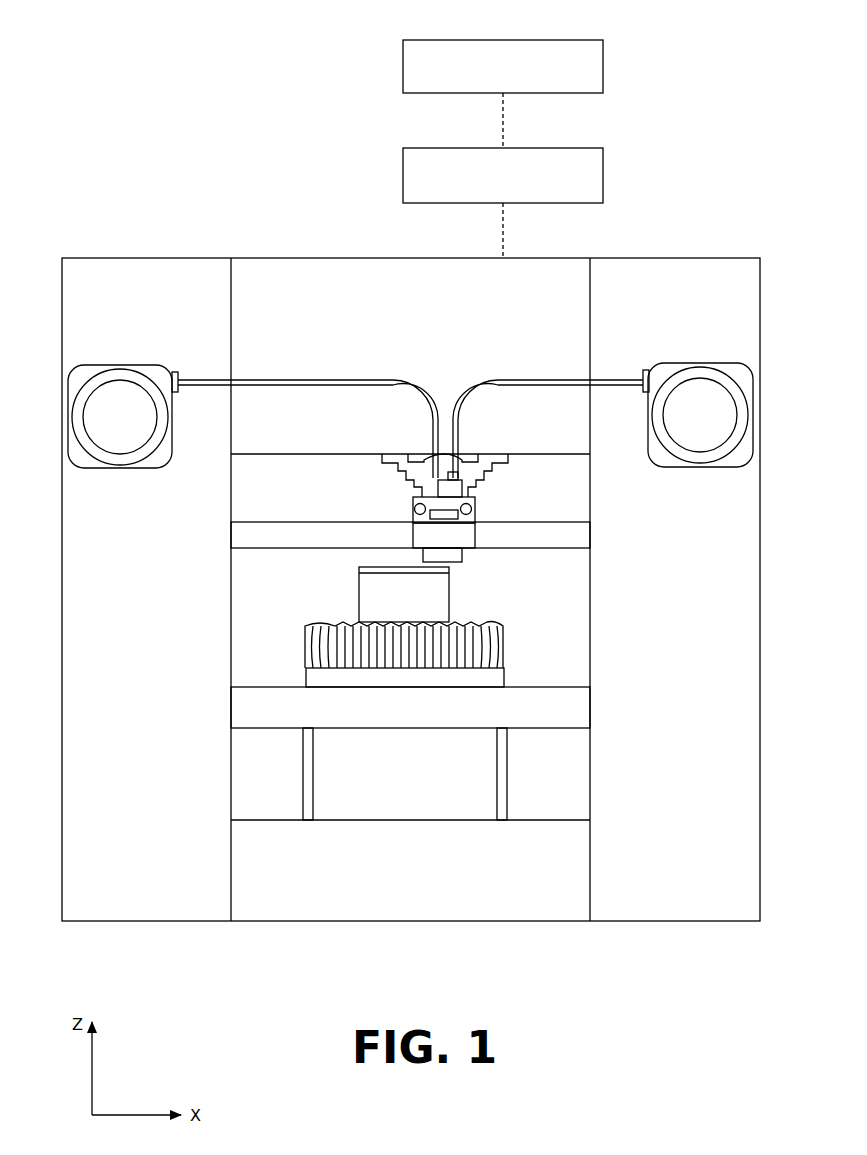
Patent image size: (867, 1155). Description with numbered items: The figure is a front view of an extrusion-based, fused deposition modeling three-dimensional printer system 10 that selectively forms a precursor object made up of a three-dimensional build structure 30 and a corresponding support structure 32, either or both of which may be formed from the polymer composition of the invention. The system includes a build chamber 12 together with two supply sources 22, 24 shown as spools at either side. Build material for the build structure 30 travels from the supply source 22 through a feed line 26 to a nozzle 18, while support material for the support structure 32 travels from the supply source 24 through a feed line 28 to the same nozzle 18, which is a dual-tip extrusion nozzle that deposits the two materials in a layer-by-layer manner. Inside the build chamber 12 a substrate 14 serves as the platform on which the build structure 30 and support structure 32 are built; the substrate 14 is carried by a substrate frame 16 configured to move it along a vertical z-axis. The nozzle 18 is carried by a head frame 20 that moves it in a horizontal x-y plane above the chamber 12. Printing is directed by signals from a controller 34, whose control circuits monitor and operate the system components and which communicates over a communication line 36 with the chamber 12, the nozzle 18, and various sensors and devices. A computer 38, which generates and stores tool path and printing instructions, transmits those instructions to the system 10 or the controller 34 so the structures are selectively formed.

The three-dimensional printer system 10 is at (160, 68).
The build chamber 12 is at (236, 637).
The substrate 14 is at (583, 718).
The substrate frame 16 is at (514, 804).
The nozzle 18 is at (486, 503).
The head frame 20 is at (290, 522).
The supply source 22 is at (133, 364).
The supply source 24 is at (678, 364).
The feed line 26 is at (250, 380).
The feed line 28 is at (600, 381).
The build structure 30 is at (368, 607).
The support structure 32 is at (495, 678).
The controller 34 is at (603, 165).
The communication line 36 is at (503, 229).
The computer 38 is at (603, 62).